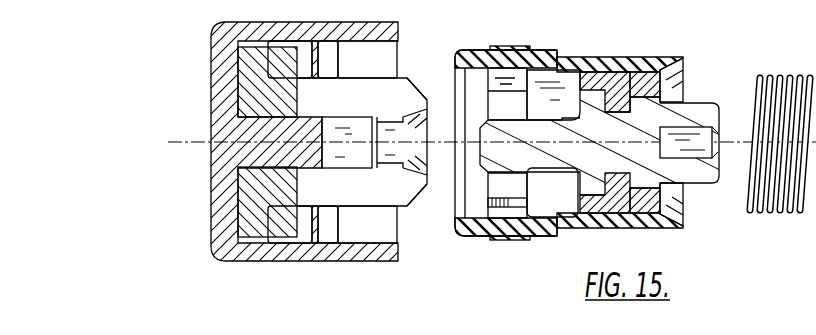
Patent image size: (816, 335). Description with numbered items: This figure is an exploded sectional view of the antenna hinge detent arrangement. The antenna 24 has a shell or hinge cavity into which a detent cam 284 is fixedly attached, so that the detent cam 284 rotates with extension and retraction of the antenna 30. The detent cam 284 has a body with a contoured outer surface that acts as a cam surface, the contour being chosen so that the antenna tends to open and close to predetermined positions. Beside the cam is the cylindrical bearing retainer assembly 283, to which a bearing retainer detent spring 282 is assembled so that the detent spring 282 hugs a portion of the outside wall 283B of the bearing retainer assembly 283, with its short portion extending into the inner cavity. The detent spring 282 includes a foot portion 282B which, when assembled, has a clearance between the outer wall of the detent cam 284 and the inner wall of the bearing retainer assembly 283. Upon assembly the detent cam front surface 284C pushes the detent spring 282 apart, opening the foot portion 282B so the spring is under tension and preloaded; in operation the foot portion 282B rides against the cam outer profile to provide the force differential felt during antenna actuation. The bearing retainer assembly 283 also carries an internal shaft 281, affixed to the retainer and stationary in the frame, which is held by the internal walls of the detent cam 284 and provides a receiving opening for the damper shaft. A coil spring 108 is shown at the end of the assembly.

The antenna 30 is at (102, 3).
The antenna 24 is at (210, 78).
The detent cam 284 is at (406, 196).
The detent cam front surface 284C is at (424, 186).
The bearing retainer detent spring 282 is at (497, 97).
The outside wall 283B is at (513, 48).
The foot portion 282B is at (507, 210).
The bearing retainer assembly 283 is at (607, 56).
The shaft 281 is at (697, 110).
The spring 108 is at (768, 202).